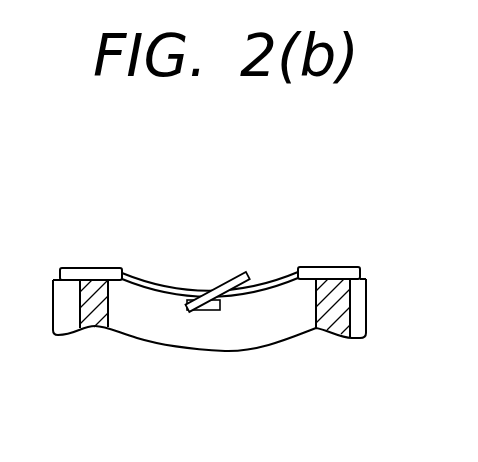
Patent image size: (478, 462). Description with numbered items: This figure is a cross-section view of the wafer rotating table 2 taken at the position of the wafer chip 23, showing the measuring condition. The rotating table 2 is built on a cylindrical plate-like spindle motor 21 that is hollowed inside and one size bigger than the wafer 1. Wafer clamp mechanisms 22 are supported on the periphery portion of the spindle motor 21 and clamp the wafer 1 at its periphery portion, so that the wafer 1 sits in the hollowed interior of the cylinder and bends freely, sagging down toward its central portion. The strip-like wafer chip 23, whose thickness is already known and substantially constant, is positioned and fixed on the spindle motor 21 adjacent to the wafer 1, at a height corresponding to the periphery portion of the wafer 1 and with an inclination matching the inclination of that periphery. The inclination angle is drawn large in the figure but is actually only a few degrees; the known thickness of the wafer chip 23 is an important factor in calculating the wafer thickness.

The wafer 1 is at (280, 274).
The rotating table 2 is at (78, 346).
The spindle motor 21 is at (363, 307).
The wafer clamp mechanism 22 is at (88, 271).
The wafer chip 23 is at (228, 274).